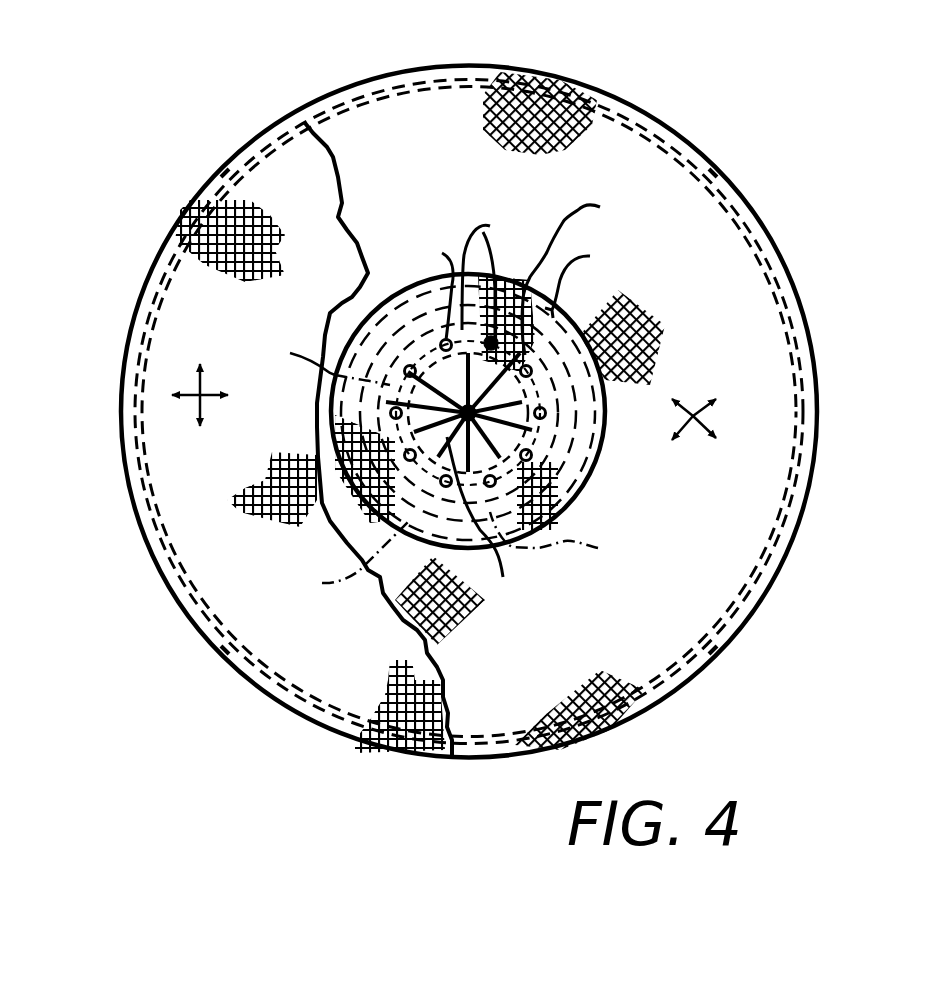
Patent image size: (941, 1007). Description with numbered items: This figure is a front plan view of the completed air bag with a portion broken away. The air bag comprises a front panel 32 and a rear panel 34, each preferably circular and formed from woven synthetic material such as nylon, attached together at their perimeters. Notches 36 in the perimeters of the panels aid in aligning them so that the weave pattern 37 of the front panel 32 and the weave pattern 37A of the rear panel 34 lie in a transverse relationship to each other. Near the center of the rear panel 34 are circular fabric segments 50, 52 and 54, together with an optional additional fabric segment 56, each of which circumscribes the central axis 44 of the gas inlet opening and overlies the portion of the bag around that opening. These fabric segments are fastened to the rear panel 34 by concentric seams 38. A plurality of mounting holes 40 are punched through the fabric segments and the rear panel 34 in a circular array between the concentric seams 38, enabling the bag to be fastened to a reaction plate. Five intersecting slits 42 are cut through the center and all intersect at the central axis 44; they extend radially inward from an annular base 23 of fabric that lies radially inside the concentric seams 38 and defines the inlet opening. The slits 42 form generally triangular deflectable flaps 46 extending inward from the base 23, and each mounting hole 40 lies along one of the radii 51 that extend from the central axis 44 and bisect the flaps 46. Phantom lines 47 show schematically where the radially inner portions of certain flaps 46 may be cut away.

The annular base 23 is at (582, 273).
The front panel 32 is at (192, 300).
The rear panel 34 is at (730, 321).
The notches 36 is at (226, 176).
The weave pattern 37 is at (195, 401).
The weave pattern 37A is at (713, 415).
The concentric seams 38 is at (556, 402).
The mounting holes 40 is at (502, 274).
The intersecting slits 42 is at (503, 577).
The central axis 44 is at (540, 414).
The deflectable flaps 46 is at (333, 395).
The phantom lines 47 is at (445, 467).
The fabric segment 50 is at (378, 323).
The radii 51 is at (429, 286).
The fabric segment 52 is at (568, 455).
The fabric segment 54 is at (468, 413).
The additional fabric segment 56 is at (589, 275).